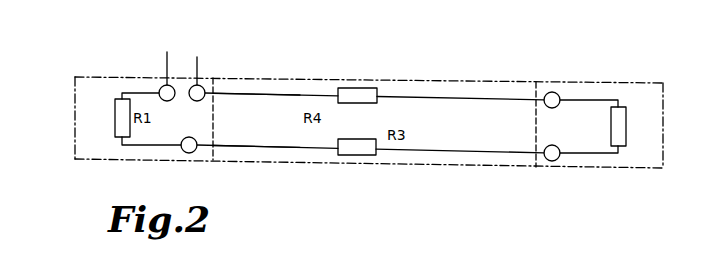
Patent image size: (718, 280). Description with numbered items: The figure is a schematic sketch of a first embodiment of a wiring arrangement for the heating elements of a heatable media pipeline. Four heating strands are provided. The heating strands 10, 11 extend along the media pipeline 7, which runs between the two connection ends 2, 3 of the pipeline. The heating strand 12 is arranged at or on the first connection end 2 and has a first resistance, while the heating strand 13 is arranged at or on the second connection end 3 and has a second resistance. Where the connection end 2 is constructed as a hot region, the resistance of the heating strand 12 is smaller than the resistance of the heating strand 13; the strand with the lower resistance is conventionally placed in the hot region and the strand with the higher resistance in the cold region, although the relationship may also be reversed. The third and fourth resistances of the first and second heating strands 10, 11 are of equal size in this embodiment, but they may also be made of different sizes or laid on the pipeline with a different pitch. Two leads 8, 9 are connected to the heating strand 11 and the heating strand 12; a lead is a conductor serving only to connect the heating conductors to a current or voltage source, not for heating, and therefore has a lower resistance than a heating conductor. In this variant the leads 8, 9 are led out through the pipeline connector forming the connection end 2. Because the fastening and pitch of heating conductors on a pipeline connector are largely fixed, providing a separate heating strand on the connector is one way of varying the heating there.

The first connection end 2 is at (92, 75).
The second connection end 3 is at (640, 83).
The media pipeline 7 is at (440, 81).
The lead 8 is at (164, 57).
The lead 9 is at (197, 56).
The heating strand 10 is at (281, 149).
The heating strand 11 is at (282, 94).
The heating strand 12 is at (137, 146).
The heating strand 13 is at (583, 98).